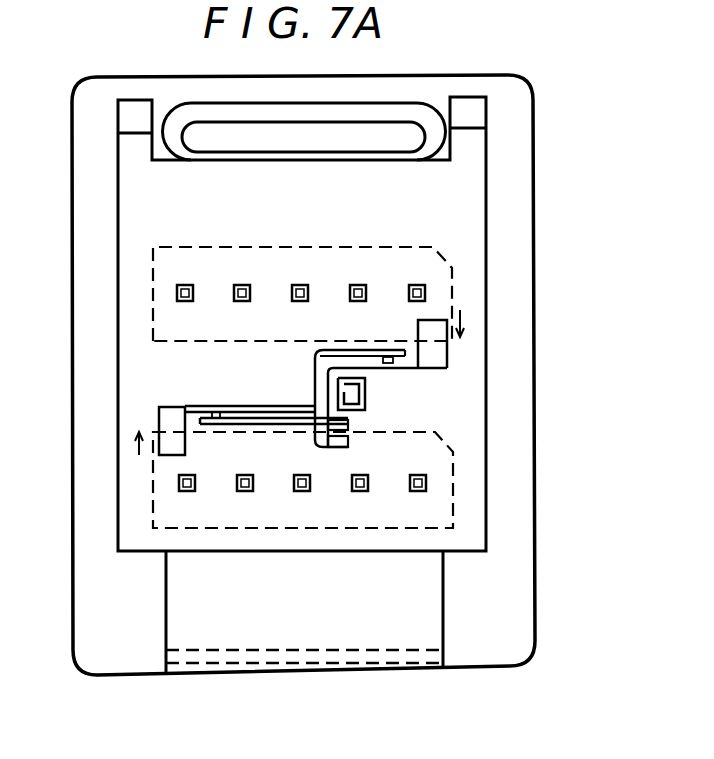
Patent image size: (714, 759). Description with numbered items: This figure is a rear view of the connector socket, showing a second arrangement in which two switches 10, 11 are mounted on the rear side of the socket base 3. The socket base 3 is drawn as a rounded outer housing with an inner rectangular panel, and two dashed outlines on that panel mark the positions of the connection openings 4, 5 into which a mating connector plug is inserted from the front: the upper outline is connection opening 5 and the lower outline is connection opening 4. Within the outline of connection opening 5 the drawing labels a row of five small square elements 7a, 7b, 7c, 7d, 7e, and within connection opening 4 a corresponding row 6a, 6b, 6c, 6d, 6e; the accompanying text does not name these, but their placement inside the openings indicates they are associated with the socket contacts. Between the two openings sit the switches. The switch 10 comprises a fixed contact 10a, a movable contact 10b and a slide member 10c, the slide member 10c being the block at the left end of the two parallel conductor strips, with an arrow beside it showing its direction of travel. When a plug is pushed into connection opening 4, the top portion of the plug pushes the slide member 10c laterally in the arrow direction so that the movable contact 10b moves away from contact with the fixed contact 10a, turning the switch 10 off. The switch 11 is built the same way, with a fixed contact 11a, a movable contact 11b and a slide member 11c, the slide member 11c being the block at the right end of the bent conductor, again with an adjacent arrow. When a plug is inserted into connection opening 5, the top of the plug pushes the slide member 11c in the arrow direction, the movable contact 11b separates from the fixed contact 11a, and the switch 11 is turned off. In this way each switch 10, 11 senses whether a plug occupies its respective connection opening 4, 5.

The socket base 3 is at (532, 108).
The connection opening 4 is at (455, 478).
The connection opening 5 is at (455, 278).
The lower terminal 6a is at (418, 492).
The lower terminal 6b is at (360, 492).
The lower terminal 6c is at (302, 492).
The lower terminal 6d is at (245, 492).
The lower terminal 6e is at (187, 492).
The upper terminal 7a is at (418, 284).
The upper terminal 7b is at (359, 284).
The upper terminal 7c is at (301, 284).
The upper terminal 7d is at (243, 284).
The upper terminal 7e is at (186, 284).
The switch 10 is at (238, 414).
The fixed contact 10a is at (218, 426).
The movable contact 10b is at (218, 412).
The slide member 10c is at (163, 424).
The switch 11 is at (391, 375).
The fixed contact 11a is at (390, 350).
The movable contact 11b is at (393, 370).
The slide member 11c is at (441, 370).